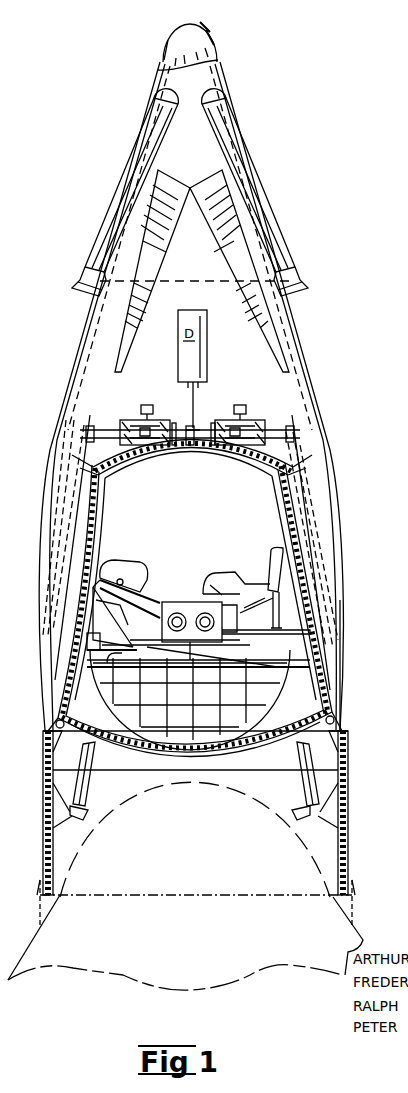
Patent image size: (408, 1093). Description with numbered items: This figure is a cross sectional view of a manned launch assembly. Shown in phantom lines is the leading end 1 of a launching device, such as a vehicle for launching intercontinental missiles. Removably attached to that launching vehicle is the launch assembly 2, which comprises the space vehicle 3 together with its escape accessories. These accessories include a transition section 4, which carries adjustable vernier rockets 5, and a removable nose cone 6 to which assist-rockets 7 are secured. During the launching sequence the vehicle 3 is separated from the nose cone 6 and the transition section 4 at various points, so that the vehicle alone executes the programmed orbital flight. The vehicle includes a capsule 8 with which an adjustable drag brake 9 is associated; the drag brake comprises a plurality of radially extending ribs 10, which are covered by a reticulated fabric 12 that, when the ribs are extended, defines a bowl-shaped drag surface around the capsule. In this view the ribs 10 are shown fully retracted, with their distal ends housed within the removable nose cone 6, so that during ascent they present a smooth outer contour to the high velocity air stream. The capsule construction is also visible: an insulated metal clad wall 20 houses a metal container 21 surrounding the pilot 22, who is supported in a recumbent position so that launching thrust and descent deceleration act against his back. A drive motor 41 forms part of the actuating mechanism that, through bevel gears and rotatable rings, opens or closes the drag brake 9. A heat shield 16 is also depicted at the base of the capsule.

The leading end of a launching device 1 is at (370, 925).
The launch assembly 2 is at (352, 492).
The space vehicle 3 is at (344, 660).
The transition section 4 is at (350, 790).
The adjustable vernier rockets 5 is at (302, 782).
The removable nose cone 6 is at (218, 68).
The assist-rockets 7 is at (262, 204).
The capsule 8 is at (334, 694).
The adjustable drag brake 9 is at (333, 452).
The radially extending ribs 10 is at (287, 333).
The reticulated fabric 12 is at (170, 217).
The heat shield 16 is at (168, 742).
The insulated metal clad wall 20 is at (133, 744).
The metal container 21 is at (98, 688).
The pilot 22 is at (182, 600).
The drive motor 41 is at (232, 411).